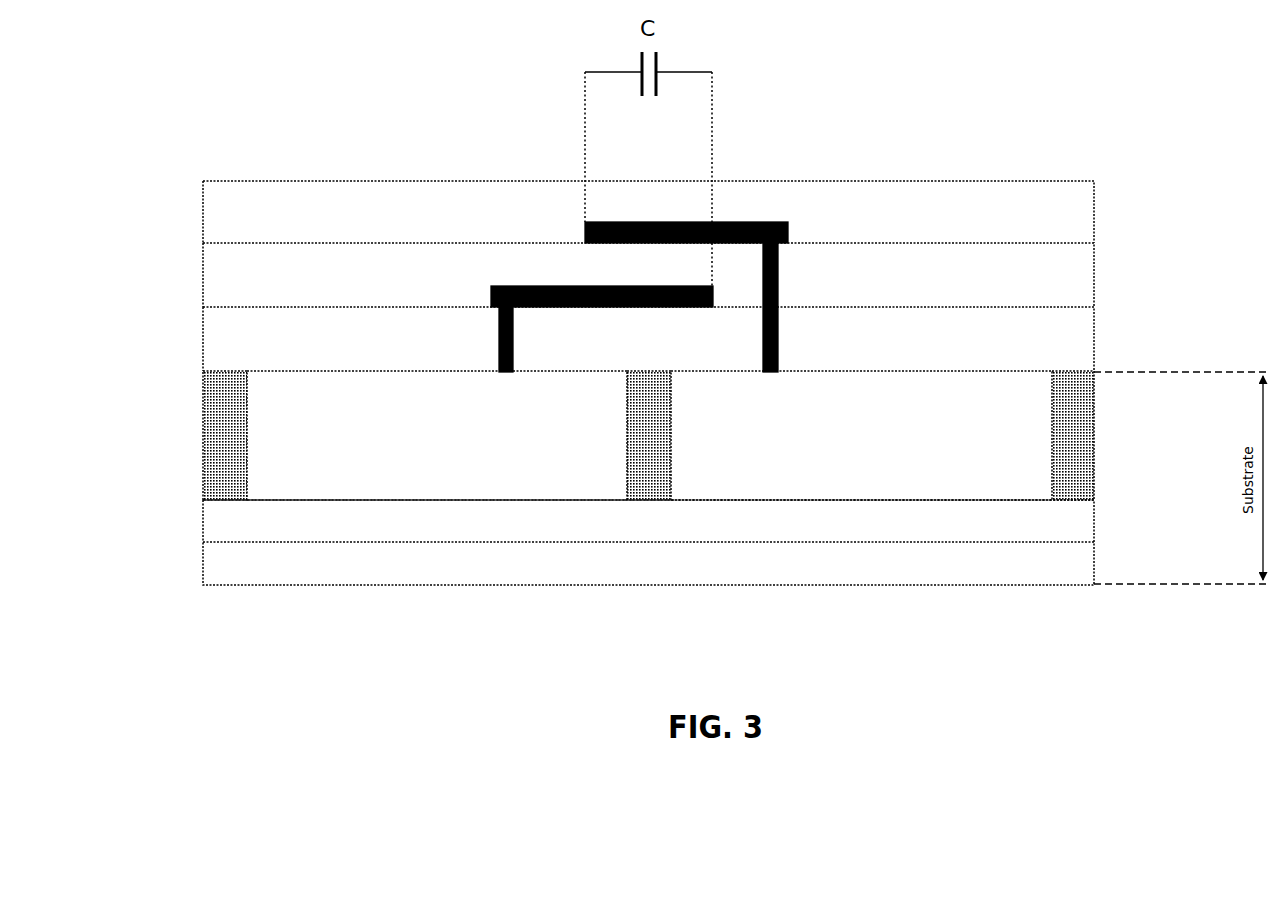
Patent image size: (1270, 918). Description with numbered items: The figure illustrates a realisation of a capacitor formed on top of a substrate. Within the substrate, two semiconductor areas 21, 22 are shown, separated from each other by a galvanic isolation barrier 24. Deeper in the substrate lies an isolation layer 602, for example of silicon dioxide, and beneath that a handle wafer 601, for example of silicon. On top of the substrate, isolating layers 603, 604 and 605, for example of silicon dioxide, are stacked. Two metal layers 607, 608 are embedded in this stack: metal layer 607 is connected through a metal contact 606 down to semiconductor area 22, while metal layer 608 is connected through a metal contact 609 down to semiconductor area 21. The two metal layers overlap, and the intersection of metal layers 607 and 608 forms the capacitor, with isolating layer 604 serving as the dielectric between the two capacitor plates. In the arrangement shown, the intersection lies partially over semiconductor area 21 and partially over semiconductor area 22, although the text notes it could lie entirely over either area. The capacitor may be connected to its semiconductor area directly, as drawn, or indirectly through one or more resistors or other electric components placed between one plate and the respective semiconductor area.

The semiconductor area 21 is at (309, 462).
The semiconductor area 22 is at (929, 482).
The galvanic isolation barrier 24 is at (214, 420).
The handle wafer 601 is at (1075, 553).
The isolation layer 602 is at (1075, 517).
The isolating layer 603 is at (1074, 336).
The isolating layer 604 is at (1074, 274).
The isolating layer 605 is at (1074, 219).
The metal contact 606 is at (779, 293).
The metal layer 607 is at (737, 217).
The metal layer 608 is at (549, 282).
The metal contact 609 is at (496, 343).